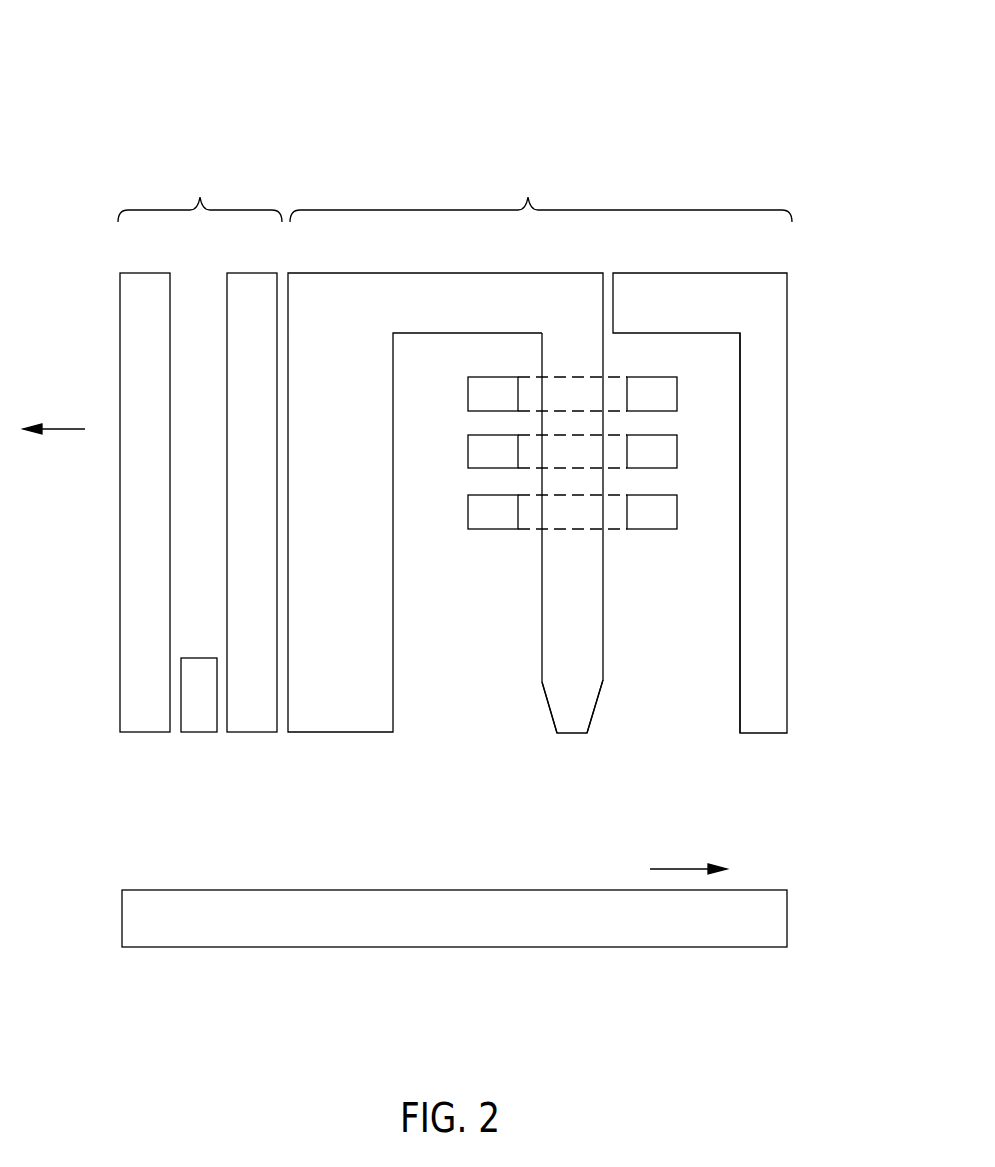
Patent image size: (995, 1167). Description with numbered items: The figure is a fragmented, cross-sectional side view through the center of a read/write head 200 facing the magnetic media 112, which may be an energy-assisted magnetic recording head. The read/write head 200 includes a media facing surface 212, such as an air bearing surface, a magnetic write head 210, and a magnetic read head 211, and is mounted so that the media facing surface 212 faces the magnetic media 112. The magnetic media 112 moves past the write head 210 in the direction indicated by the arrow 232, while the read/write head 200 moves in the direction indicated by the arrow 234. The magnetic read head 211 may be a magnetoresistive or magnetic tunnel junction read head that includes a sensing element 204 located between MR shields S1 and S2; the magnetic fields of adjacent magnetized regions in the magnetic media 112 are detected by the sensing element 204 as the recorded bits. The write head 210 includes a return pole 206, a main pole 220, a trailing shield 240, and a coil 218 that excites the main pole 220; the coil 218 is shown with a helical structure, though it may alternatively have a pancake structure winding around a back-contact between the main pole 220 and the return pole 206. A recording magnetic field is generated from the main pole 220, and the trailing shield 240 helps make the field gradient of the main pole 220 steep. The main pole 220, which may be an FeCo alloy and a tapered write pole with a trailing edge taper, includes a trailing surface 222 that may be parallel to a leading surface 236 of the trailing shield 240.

The read/write head 200 is at (129, 67).
The magnetic read head 211 is at (200, 190).
The magnetic write head 210 is at (541, 190).
The MR shield S1 is at (143, 732).
The MR sensing element 204 is at (197, 732).
The MR shield S2 is at (253, 732).
The return pole 206 is at (340, 732).
The media facing surface 212 is at (567, 733).
The coil 218 is at (493, 529).
The main pole 220 is at (538, 688).
The trailing surface 222 is at (603, 653).
The leading surface 236 is at (740, 598).
The trailing shield 240 is at (787, 695).
The magnetic media 112 is at (787, 917).
The arrow 232 is at (680, 868).
The arrow 234 is at (65, 428).